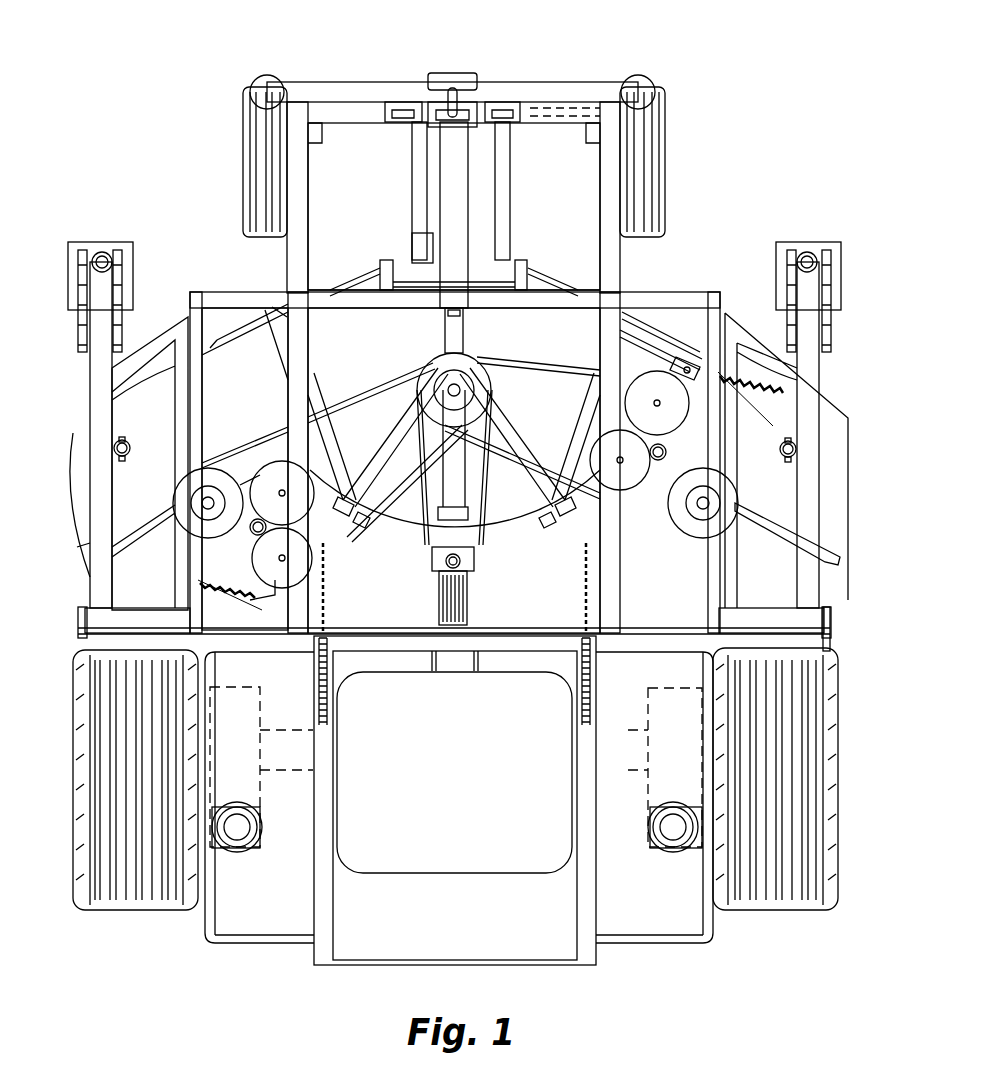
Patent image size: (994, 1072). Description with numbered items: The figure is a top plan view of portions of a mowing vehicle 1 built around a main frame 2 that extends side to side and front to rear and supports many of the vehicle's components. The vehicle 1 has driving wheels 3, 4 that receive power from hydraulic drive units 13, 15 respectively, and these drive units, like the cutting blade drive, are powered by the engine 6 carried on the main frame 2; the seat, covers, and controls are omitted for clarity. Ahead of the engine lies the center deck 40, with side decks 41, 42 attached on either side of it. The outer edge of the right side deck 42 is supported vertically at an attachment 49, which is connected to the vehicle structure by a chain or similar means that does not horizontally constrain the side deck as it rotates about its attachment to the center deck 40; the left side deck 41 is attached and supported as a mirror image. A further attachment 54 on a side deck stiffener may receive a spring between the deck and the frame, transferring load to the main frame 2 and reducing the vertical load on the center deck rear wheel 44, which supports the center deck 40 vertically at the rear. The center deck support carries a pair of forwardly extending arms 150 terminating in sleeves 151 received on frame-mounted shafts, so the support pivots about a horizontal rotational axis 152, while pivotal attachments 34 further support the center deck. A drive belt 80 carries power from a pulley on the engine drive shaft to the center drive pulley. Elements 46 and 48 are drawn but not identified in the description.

The vehicle 1 is at (188, 157).
The main frame 2 is at (248, 296).
The driving wheel 3 is at (113, 890).
The driving wheel 4 is at (787, 877).
The engine 6 is at (523, 848).
The hydraulic drive unit 13 is at (222, 778).
The hydraulic drive unit 15 is at (683, 763).
The pivotal attachments 34 is at (380, 270).
The center deck 40 is at (555, 350).
The side deck 41 is at (238, 355).
The side deck 42 is at (760, 405).
The center deck rear wheel 44 is at (440, 580).
The bracket 46 is at (830, 625).
The pivot bolt 48 is at (114, 445).
The attachment 49 is at (122, 460).
The attachment 54 is at (355, 525).
The drive belt 80 is at (478, 640).
The forwardly extending arms 150 is at (525, 137).
The sleeves 151 is at (498, 110).
The horizontal rotational axis 152 is at (567, 113).